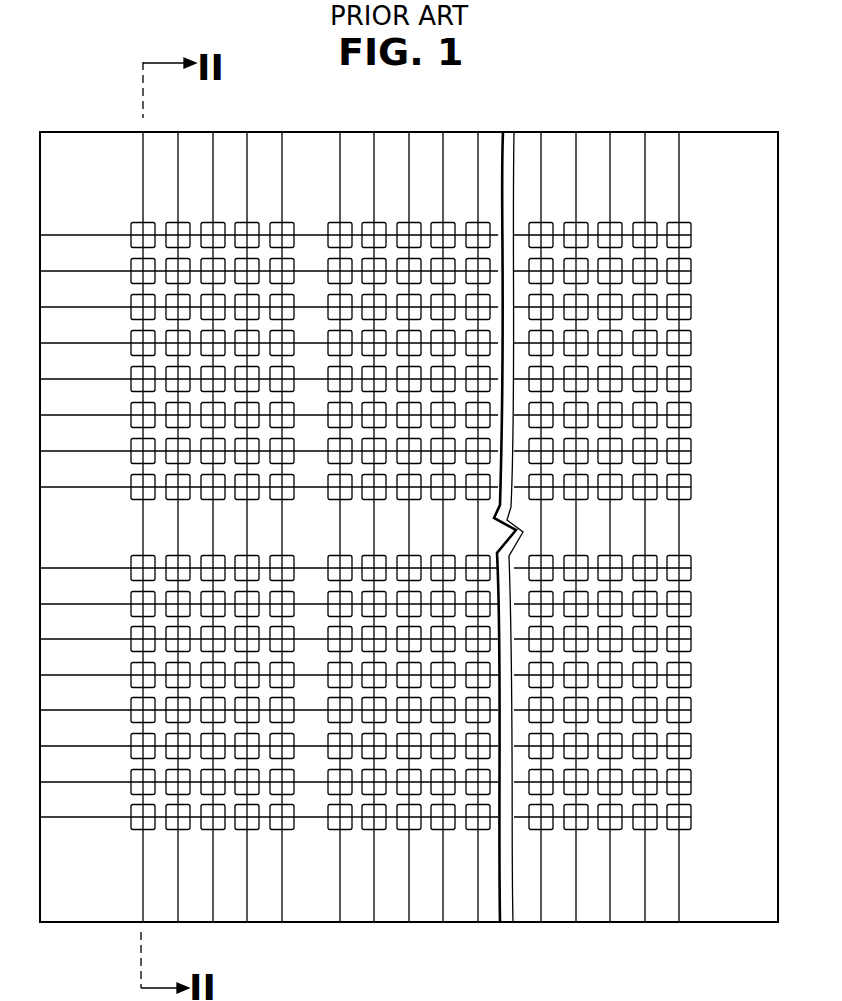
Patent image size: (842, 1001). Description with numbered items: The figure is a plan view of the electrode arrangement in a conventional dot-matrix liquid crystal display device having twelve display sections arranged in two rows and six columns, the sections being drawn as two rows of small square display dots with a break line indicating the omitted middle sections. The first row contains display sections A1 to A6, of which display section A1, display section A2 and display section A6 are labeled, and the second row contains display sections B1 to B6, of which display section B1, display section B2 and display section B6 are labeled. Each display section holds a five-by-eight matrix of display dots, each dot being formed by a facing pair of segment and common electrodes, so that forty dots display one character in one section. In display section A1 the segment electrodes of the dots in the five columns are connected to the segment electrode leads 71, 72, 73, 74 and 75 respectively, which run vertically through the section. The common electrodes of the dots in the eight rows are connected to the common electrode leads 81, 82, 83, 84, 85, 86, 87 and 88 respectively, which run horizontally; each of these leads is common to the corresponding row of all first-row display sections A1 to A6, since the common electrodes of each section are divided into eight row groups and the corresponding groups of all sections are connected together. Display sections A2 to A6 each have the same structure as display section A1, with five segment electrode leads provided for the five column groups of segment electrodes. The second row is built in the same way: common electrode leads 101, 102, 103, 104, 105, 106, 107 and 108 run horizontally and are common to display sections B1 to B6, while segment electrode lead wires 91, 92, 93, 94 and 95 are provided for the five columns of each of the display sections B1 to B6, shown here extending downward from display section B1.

The segment electrode lead 71 is at (142, 148).
The segment electrode lead 72 is at (177, 143).
The segment electrode lead 73 is at (212, 155).
The segment electrode lead 74 is at (247, 192).
The segment electrode lead 75 is at (282, 192).
The common electrode lead 81 is at (100, 235).
The common electrode lead 82 is at (100, 271).
The common electrode lead 83 is at (100, 307).
The common electrode lead 84 is at (100, 343).
The common electrode lead 85 is at (100, 379).
The common electrode lead 86 is at (100, 415).
The common electrode lead 87 is at (100, 451).
The common electrode lead 88 is at (100, 487).
The segment electrode lead wire 91 is at (142, 877).
The segment electrode lead wire 92 is at (178, 890).
The segment electrode lead wire 93 is at (213, 890).
The segment electrode lead wire 94 is at (247, 890).
The segment electrode lead wire 95 is at (282, 890).
The common electrode lead 101 is at (104, 568).
The common electrode lead 102 is at (106, 604).
The common electrode lead 103 is at (104, 639).
The common electrode lead 104 is at (106, 675).
The common electrode lead 105 is at (104, 710).
The common electrode lead 106 is at (106, 746).
The common electrode lead 107 is at (104, 782).
The common electrode lead 108 is at (106, 817).
The display section A1 is at (337, 119).
The display section A2 is at (427, 222).
The display section A6 is at (627, 220).
The display section B1 is at (288, 833).
The display section B2 is at (425, 833).
The display section B6 is at (628, 833).